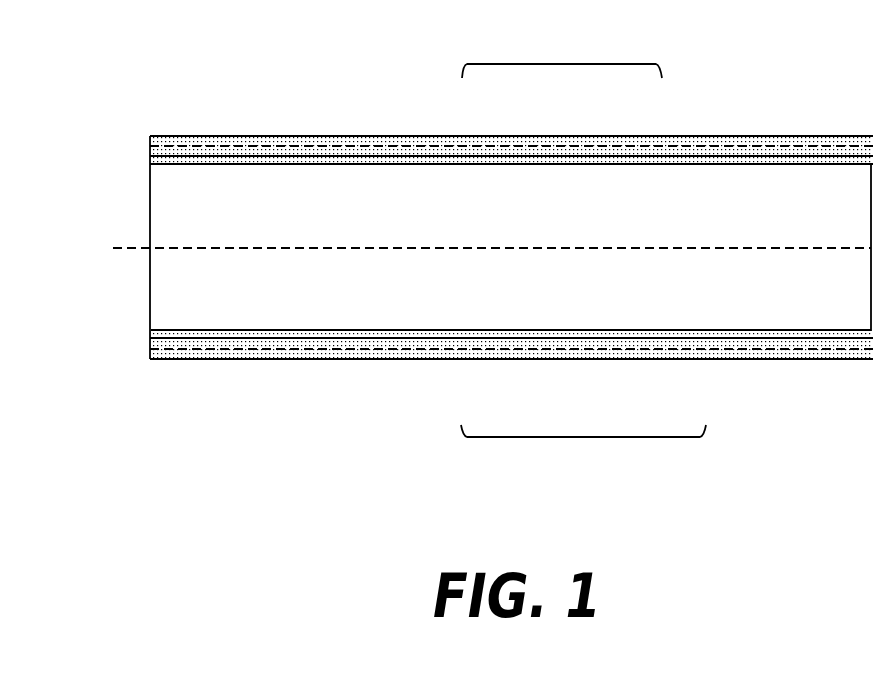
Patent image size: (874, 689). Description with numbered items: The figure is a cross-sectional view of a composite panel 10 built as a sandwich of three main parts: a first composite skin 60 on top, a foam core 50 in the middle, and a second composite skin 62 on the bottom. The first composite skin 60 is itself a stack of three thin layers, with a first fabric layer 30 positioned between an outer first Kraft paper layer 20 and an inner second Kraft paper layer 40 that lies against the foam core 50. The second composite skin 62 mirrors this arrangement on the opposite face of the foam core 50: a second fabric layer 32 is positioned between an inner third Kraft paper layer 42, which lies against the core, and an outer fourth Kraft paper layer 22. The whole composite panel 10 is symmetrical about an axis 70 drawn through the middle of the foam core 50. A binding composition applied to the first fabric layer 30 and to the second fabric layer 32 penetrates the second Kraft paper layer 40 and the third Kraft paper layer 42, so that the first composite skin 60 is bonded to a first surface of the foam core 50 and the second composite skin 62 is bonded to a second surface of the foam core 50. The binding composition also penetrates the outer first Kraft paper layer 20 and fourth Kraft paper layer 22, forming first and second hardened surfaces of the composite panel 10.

The composite panel 10 is at (330, 98).
The first Kraft paper layer 20 is at (478, 135).
The fourth Kraft paper layer 22 is at (492, 358).
The first fabric layer 30 is at (556, 136).
The second fabric layer 32 is at (590, 350).
The second Kraft paper layer 40 is at (616, 136).
The third Kraft paper layer 42 is at (688, 340).
The foam core 50 is at (762, 163).
The first composite skin 60 is at (562, 62).
The second composite skin 62 is at (584, 440).
The axis 70 is at (133, 247).